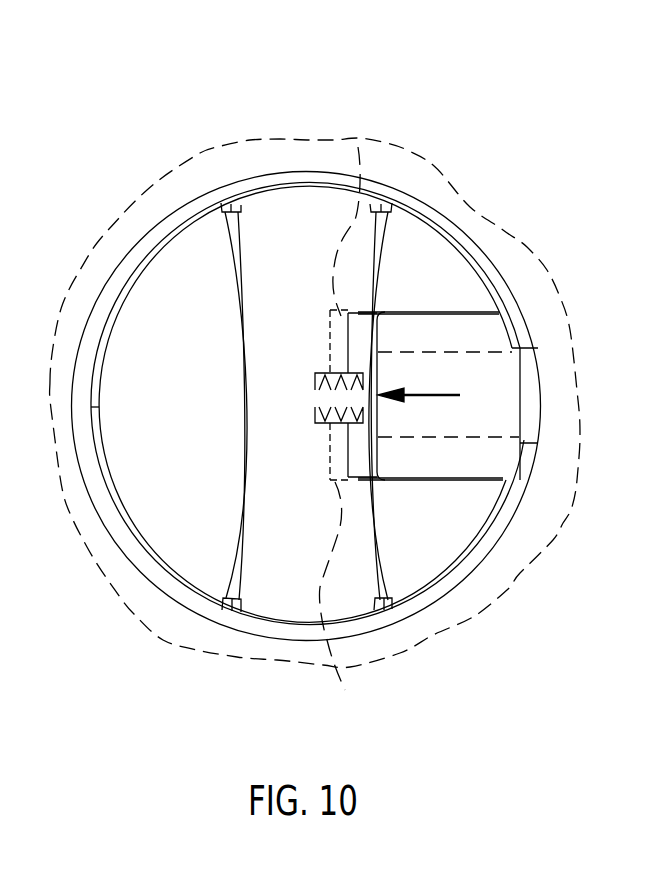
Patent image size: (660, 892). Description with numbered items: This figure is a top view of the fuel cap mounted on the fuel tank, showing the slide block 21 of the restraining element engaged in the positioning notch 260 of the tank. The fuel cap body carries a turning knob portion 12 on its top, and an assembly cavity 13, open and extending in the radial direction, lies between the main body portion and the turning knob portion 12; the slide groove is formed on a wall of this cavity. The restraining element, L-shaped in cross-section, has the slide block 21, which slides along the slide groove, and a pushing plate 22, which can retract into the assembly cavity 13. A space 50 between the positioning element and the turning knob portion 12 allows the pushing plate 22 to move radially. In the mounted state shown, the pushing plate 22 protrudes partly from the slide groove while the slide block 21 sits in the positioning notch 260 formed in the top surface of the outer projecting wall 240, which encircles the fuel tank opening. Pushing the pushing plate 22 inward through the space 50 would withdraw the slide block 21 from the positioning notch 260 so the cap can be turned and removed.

The turning knob portion 12 is at (302, 234).
The assembly cavity 13 is at (335, 665).
The slide block 21 is at (528, 410).
The pushing plate 22 is at (377, 380).
The space 50 is at (358, 147).
The outer projecting wall 240 is at (390, 197).
The positioning notch 260 is at (520, 348).